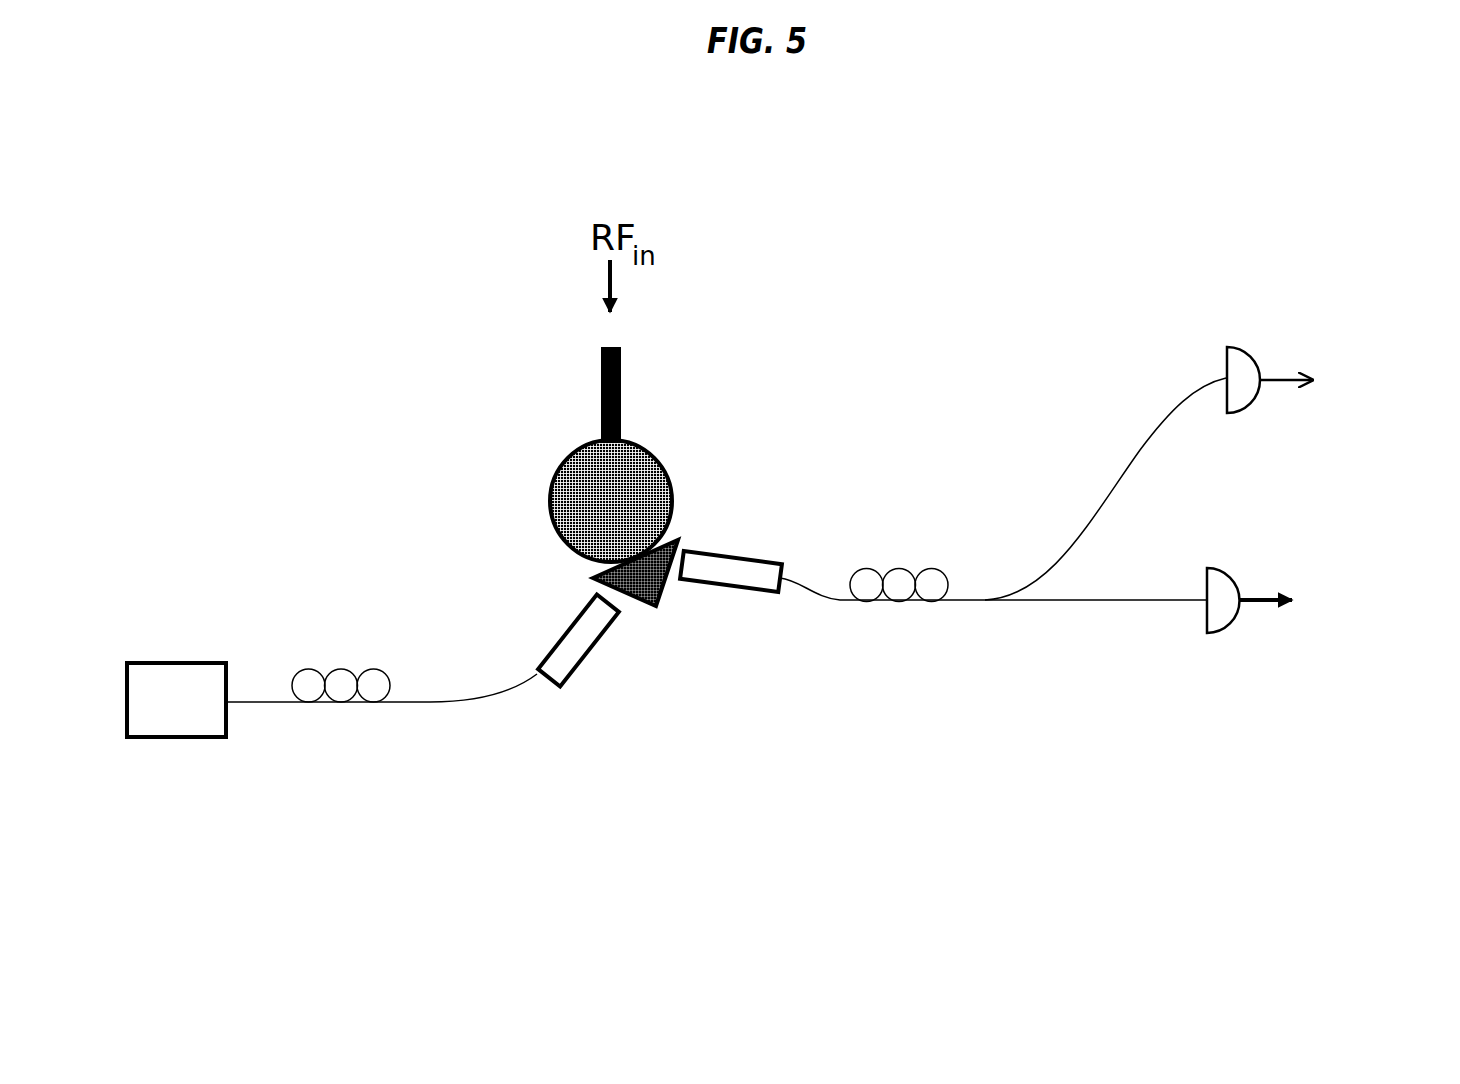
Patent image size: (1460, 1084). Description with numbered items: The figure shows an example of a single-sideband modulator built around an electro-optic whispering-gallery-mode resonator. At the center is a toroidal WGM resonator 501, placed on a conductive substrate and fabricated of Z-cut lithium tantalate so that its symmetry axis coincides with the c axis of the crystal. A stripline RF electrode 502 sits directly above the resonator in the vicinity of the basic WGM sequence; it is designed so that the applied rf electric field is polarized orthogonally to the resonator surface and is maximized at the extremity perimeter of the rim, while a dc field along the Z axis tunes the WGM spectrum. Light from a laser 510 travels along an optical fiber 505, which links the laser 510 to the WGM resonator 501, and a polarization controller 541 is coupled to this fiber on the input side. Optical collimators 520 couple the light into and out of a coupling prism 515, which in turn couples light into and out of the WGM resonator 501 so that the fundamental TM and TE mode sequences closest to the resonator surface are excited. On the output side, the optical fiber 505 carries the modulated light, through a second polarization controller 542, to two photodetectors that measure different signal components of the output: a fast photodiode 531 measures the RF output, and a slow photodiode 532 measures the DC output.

The WGM resonator 501 is at (573, 487).
The stripline RF electrode 502 is at (620, 370).
The optical fiber 505 is at (474, 706).
The laser 510 is at (176, 719).
The coupling prism 515 is at (656, 562).
The optical collimators 520 is at (595, 660).
The fast photodiode 531 is at (1315, 629).
The slow photodiode 532 is at (1322, 408).
The polarization controller 541 is at (335, 663).
The polarization controller 542 is at (908, 609).